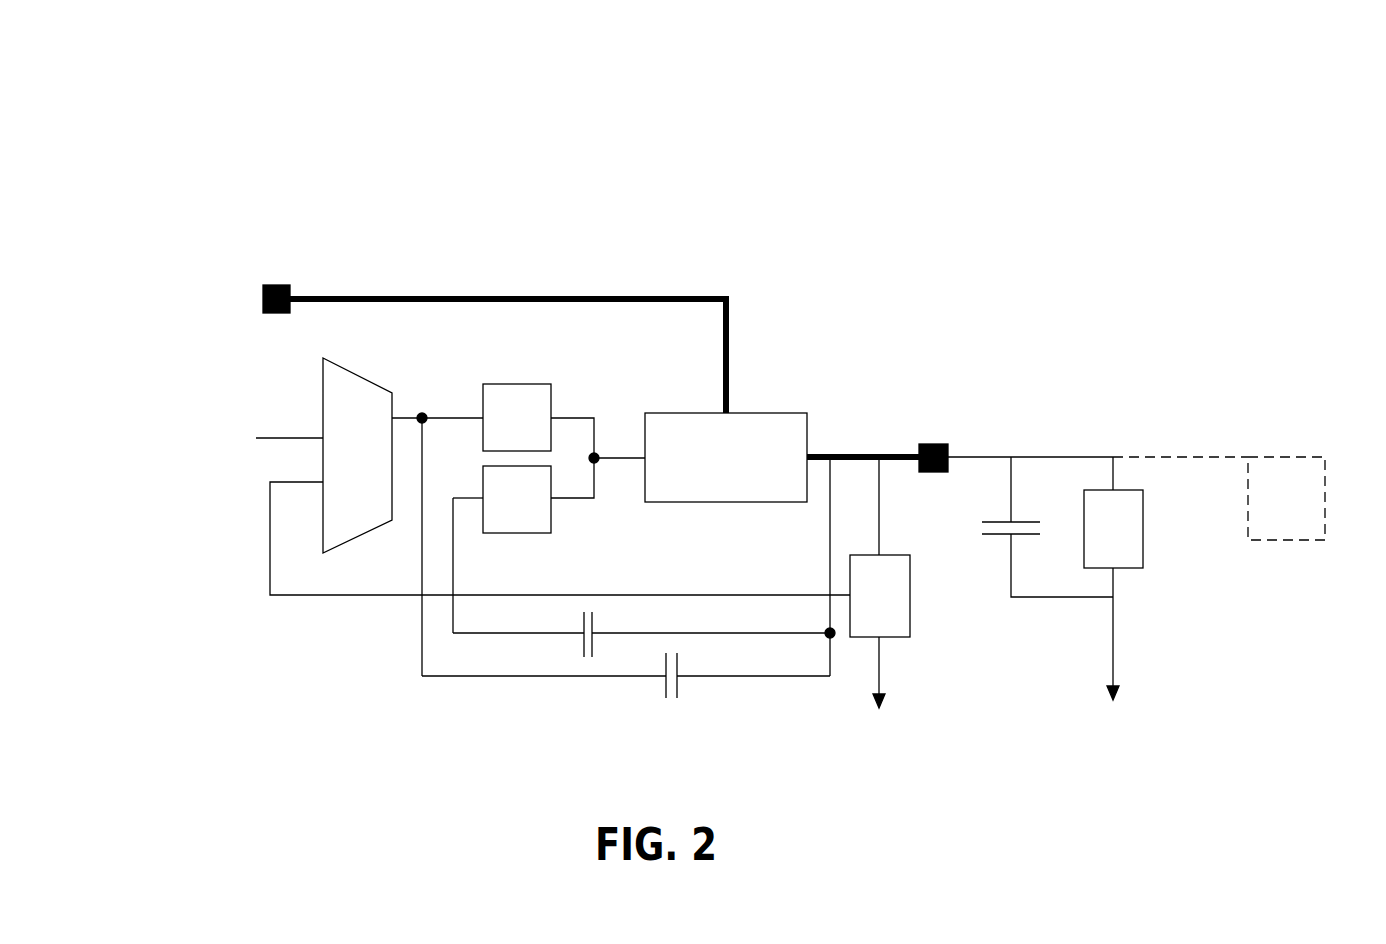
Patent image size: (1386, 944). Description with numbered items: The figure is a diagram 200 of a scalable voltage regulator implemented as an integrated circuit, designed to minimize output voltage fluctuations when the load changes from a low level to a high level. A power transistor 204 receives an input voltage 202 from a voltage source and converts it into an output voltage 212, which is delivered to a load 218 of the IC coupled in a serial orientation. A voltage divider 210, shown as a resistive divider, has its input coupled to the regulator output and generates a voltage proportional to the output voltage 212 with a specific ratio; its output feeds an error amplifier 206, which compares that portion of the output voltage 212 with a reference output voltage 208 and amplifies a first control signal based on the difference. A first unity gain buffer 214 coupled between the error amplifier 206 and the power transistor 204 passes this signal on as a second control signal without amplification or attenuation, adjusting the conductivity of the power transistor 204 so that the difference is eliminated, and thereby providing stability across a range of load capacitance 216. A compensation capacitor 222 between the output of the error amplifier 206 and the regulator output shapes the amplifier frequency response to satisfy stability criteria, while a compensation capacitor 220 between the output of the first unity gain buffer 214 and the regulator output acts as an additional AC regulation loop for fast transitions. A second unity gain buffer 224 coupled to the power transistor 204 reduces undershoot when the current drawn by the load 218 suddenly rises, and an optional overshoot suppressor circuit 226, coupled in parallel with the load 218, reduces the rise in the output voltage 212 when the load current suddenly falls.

The diagram 200 is at (1193, 110).
The input voltage 202 is at (270, 258).
The power transistor 204 is at (683, 390).
The error amplifier 206 is at (308, 370).
The reference output voltage 208 is at (218, 415).
The voltage divider 210 is at (900, 647).
The output voltage 212 is at (955, 407).
The first unity gain buffer 214 is at (489, 370).
The load capacitance 216 is at (1000, 546).
The load 218 is at (1130, 521).
The compensation capacitor 220 is at (568, 638).
The compensation capacitor 222 is at (650, 698).
The second unity gain buffer 224 is at (558, 522).
The overshoot suppressor circuit 226 is at (1282, 445).